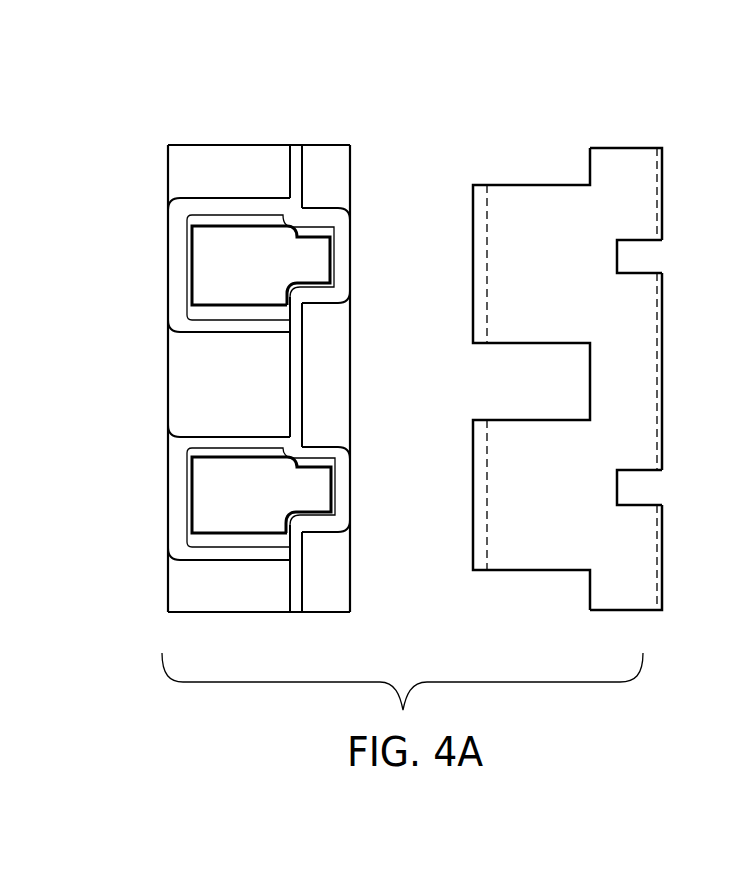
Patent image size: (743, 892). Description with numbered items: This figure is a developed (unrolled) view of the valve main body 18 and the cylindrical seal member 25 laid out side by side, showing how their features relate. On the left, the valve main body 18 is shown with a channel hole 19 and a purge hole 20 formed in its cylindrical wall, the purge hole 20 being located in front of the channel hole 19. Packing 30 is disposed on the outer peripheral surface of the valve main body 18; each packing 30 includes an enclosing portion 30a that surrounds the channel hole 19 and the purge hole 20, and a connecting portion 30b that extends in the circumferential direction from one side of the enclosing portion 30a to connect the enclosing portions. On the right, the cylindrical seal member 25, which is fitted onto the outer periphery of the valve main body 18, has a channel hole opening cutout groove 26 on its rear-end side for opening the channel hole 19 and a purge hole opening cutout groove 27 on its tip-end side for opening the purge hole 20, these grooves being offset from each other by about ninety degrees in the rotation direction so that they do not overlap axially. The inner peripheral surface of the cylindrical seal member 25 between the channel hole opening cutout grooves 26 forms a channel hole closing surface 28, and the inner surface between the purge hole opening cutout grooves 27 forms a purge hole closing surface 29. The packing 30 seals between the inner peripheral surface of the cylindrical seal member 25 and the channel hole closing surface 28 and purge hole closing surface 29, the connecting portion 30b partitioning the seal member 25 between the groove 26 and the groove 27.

The valve main body 18 is at (271, 126).
The channel hole 19 is at (244, 287).
The purge hole 20 is at (315, 243).
The cylindrical seal member 25 is at (591, 125).
The channel hole opening cutout groove 26 is at (540, 161).
The purge hole opening cutout groove 27 is at (654, 253).
The channel hole closing surface 28 is at (522, 238).
The purge hole closing surface 29 is at (633, 376).
The packing 30 is at (170, 336).
The enclosing portion 30a is at (205, 198).
The connecting portion 30b is at (304, 341).